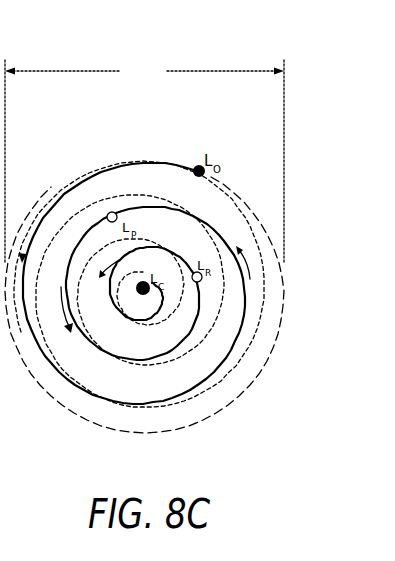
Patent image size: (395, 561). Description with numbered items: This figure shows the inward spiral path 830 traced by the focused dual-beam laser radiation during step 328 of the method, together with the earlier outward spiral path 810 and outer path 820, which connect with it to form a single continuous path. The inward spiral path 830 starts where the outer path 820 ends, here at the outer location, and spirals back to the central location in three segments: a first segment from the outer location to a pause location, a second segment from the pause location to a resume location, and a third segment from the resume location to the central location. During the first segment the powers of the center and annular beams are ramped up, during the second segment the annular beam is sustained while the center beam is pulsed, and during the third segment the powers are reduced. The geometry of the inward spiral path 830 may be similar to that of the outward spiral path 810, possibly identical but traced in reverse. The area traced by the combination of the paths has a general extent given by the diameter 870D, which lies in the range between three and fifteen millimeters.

The step 328 is at (193, 103).
The diameter 870D is at (144, 161).
The outward spiral path 810 is at (133, 197).
The outer path 820 is at (110, 166).
The inward spiral path 830 is at (64, 189).